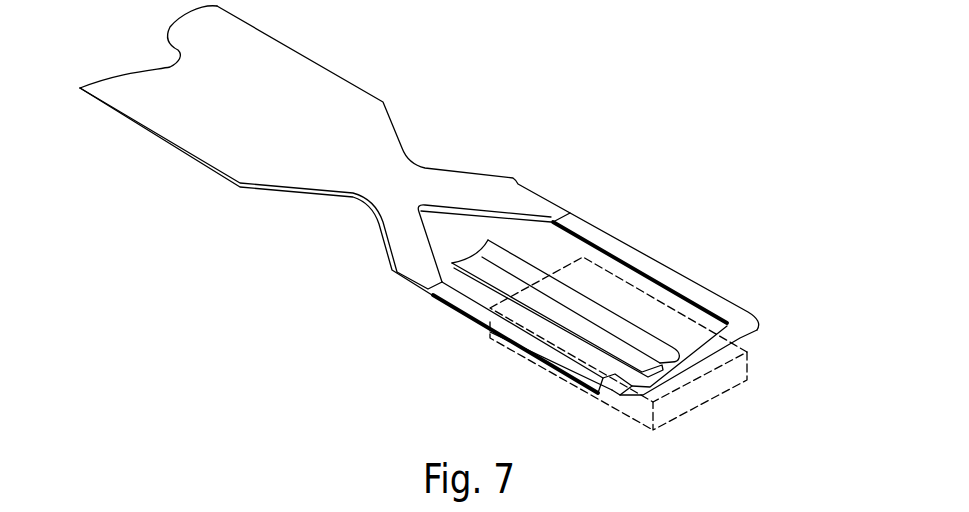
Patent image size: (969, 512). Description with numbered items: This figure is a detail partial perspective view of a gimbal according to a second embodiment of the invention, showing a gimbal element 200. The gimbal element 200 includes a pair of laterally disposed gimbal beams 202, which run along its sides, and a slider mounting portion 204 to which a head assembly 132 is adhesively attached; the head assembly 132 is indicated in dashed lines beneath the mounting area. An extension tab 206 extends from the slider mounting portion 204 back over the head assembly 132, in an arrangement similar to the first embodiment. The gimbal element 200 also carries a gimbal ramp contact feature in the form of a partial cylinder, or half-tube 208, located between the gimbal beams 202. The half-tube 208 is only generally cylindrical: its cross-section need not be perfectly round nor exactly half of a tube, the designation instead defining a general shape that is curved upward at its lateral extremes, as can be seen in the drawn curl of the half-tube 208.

The gimbal element 200 is at (623, 138).
The gimbal beams 202 is at (718, 305).
The slider mounting portion 204 is at (675, 375).
The extension tab 206 is at (602, 323).
The half-tube 208 is at (502, 270).
The head assembly 132 is at (730, 375).